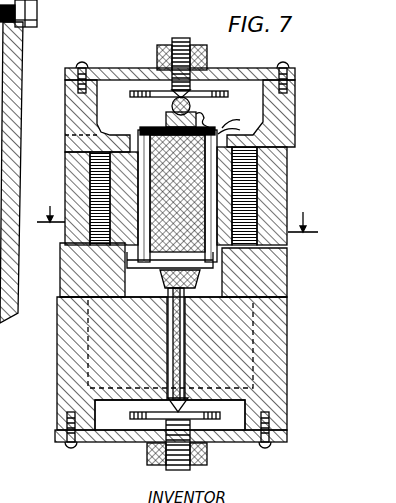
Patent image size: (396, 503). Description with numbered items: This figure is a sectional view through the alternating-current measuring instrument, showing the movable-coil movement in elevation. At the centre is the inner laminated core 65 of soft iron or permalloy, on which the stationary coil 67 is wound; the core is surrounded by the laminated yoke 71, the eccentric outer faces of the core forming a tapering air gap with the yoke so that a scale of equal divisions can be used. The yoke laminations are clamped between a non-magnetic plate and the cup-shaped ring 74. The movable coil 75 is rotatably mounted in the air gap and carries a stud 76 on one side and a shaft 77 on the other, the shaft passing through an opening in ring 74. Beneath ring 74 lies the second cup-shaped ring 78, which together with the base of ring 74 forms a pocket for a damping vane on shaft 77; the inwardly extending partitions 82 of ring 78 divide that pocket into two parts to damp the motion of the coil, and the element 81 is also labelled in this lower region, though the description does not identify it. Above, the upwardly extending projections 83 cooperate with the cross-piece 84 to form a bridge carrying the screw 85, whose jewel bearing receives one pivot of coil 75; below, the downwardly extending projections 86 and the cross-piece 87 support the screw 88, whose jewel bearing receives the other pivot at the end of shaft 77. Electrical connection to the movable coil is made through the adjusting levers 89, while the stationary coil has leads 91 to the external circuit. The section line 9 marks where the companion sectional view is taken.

The section line 9- 9 is at (177, 209).
The inner laminated core 65 is at (255, 150).
The stationary coil 67 is at (160, 276).
The laminated yoke 71 is at (262, 160).
The cup-shaped ring 74 is at (277, 290).
The movable coil 75 is at (166, 120).
The stud 76 is at (168, 103).
The shaft 77 is at (110, 330).
The second cup-shaped ring 78 is at (267, 373).
The shaft 81 is at (187, 352).
The inwardly extending partitions 82 is at (167, 338).
The upwardly extending projections 83 is at (283, 112).
The cross-piece 84 is at (120, 68).
The screw 85 is at (198, 42).
The downwardly extending projections 86 is at (62, 418).
The cross-piece 87 is at (115, 443).
The screw 88 is at (176, 470).
The adjusting levers 89 is at (160, 62).
The leads 91 is at (226, 128).